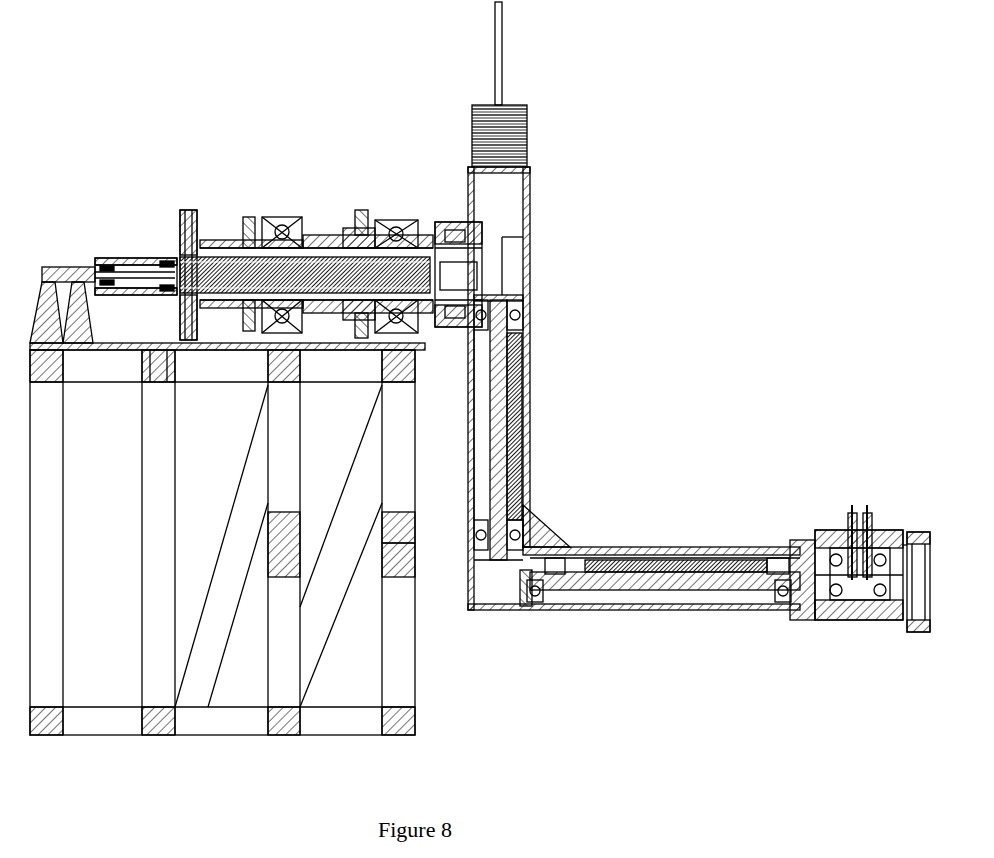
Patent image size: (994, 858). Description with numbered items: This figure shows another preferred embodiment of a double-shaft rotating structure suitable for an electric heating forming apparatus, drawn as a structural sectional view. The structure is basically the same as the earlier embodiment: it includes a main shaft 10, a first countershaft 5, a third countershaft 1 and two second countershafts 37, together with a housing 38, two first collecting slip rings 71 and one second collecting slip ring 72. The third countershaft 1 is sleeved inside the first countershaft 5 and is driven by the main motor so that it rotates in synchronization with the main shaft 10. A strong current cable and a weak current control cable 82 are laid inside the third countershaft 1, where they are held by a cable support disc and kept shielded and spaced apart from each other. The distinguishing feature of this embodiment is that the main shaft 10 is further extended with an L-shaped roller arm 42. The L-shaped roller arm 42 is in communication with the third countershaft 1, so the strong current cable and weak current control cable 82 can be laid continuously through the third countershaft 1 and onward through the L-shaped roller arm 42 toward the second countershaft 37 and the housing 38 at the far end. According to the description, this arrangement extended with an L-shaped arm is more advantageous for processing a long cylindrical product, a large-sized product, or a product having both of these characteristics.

The third countershaft 1 is at (163, 290).
The first countershaft 5 is at (226, 245).
The main shaft 10 is at (322, 240).
The second countershaft 37 is at (872, 532).
The housing 38 is at (914, 540).
The L-shaped roller arm 42 is at (514, 211).
The first collecting slip ring 71 is at (846, 530).
The second collecting slip ring 72 is at (130, 258).
The strong current cable and weak current control cable 82 is at (283, 230).